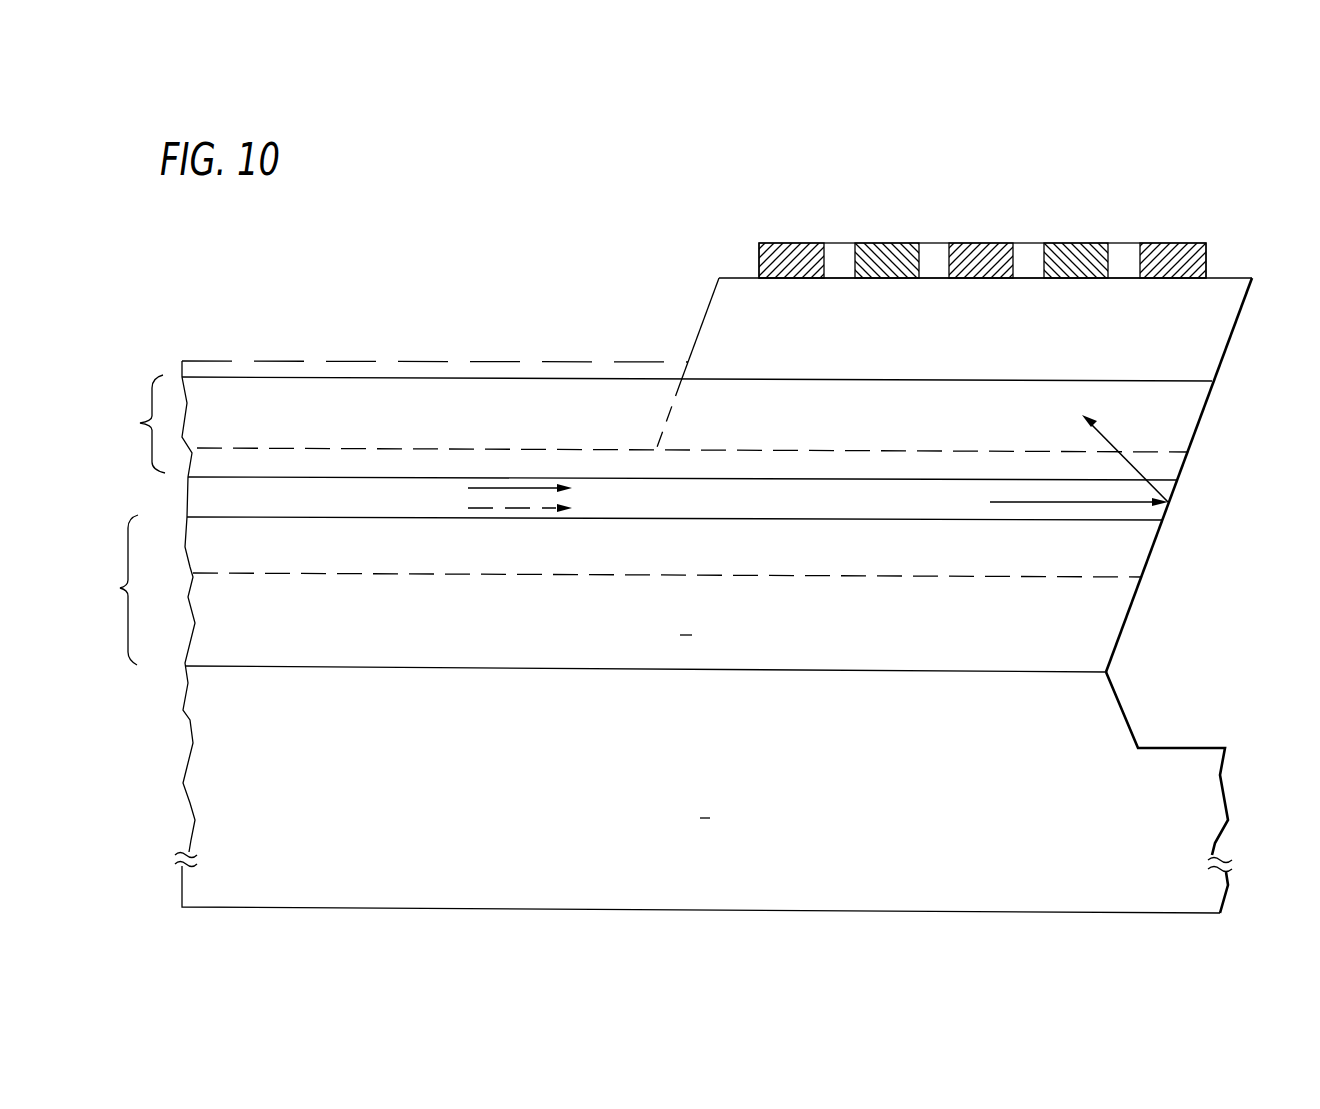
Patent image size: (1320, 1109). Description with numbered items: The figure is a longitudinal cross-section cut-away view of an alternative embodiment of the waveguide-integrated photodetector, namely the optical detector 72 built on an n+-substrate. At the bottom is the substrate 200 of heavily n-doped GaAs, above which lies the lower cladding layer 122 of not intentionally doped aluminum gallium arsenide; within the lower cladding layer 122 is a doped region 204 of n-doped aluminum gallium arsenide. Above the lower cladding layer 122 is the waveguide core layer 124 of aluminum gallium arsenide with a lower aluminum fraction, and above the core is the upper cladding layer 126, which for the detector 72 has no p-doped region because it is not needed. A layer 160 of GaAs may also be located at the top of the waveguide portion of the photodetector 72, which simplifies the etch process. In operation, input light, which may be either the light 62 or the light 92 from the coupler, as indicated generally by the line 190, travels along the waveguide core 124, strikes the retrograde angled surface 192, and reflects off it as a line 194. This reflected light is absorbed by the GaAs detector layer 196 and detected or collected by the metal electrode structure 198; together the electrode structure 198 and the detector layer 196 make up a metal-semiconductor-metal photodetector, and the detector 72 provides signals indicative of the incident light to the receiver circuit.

The optical detector 72 is at (257, 296).
The layer of GaAs 160 is at (250, 368).
The upper cladding layer 126 is at (643, 424).
The waveguide core layer 124 is at (188, 493).
The lower cladding layer 122 is at (613, 590).
The doped region 204 is at (195, 597).
The substrate 200 is at (207, 720).
The input light 62 is at (518, 488).
The light 92 is at (510, 505).
The detector layer 196 is at (725, 318).
The electrode structure 198 is at (765, 226).
The retrograde angled surface 192 is at (1203, 416).
The line indicating input light 190 is at (1025, 503).
The line indicating reflected light 194 is at (1103, 433).